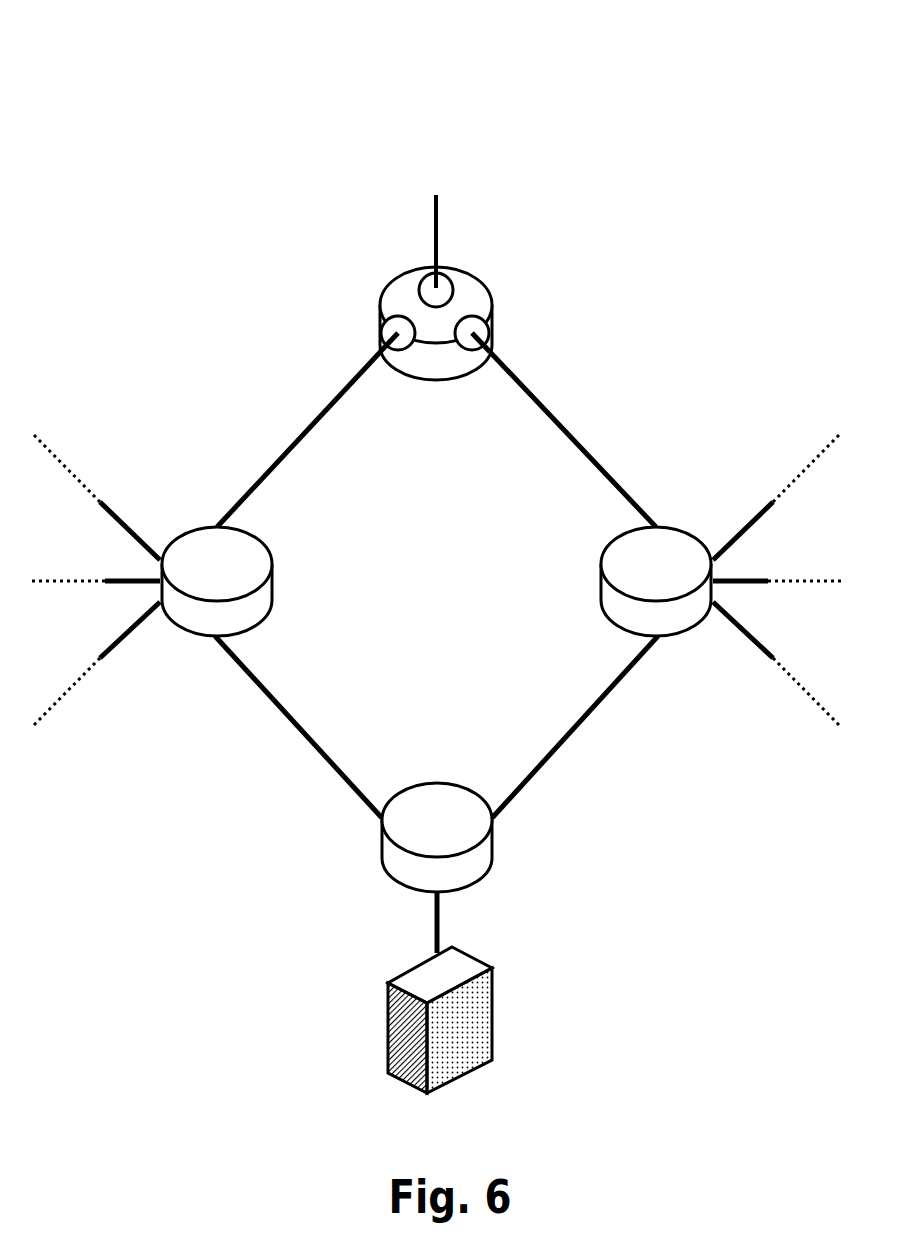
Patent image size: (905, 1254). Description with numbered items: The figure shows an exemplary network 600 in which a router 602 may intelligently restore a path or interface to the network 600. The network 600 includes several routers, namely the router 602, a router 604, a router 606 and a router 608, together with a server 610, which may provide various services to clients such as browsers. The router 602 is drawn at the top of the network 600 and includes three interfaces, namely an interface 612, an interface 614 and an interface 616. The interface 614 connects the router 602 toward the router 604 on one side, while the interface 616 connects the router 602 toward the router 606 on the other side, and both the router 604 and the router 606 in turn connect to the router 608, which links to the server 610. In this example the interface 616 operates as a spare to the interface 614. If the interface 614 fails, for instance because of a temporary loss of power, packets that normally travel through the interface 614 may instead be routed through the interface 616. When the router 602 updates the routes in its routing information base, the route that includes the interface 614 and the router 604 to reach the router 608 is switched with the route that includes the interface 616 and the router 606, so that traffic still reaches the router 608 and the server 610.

The network 600 is at (320, 122).
The router 602 is at (436, 380).
The router 604 is at (272, 581).
The router 606 is at (601, 581).
The router 608 is at (437, 783).
The server 610 is at (438, 1020).
The interface 612 is at (415, 288).
The interface 614 is at (380, 333).
The interface 616 is at (492, 333).